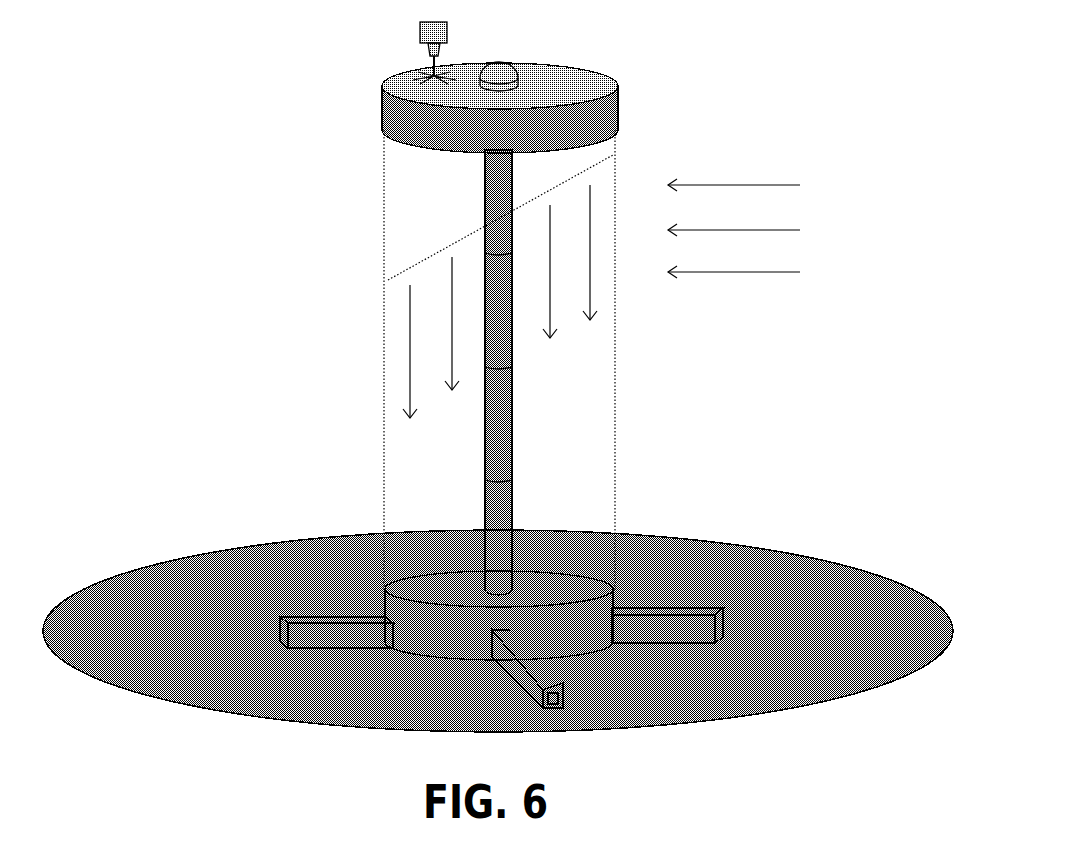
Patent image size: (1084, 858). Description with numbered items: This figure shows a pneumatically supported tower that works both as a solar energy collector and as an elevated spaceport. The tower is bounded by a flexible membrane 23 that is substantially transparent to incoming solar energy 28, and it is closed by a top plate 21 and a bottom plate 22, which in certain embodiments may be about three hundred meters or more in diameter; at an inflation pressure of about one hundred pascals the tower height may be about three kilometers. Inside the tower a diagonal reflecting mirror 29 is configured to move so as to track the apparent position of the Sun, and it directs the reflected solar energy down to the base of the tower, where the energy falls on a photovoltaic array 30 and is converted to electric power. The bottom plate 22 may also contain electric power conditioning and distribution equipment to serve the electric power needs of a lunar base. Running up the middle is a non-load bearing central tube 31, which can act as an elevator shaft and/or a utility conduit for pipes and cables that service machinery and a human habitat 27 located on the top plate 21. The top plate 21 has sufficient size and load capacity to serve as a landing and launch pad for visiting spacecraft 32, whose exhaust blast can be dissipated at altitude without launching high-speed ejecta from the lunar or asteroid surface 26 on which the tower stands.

The top plate 21 is at (603, 85).
The bottom plate 22 is at (463, 645).
The flexible membrane 23 is at (615, 443).
The ground surface 26 is at (872, 573).
The human habitat 27 is at (503, 62).
The incoming solar energy 28 is at (800, 230).
The diagonal reflecting mirror 29 is at (458, 240).
The photovoltaic array 30 is at (580, 590).
The central tube 31 is at (495, 495).
The spacecraft 32 is at (420, 33).